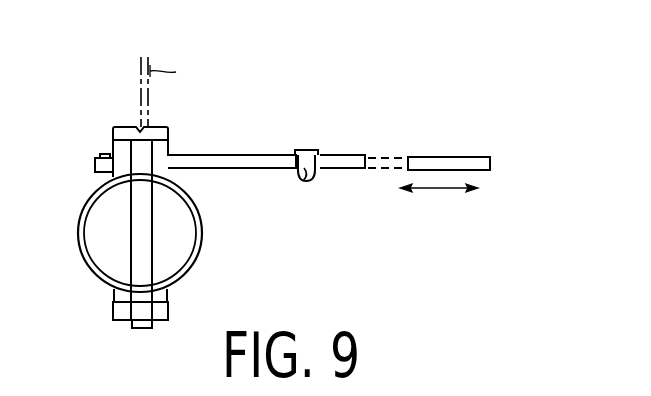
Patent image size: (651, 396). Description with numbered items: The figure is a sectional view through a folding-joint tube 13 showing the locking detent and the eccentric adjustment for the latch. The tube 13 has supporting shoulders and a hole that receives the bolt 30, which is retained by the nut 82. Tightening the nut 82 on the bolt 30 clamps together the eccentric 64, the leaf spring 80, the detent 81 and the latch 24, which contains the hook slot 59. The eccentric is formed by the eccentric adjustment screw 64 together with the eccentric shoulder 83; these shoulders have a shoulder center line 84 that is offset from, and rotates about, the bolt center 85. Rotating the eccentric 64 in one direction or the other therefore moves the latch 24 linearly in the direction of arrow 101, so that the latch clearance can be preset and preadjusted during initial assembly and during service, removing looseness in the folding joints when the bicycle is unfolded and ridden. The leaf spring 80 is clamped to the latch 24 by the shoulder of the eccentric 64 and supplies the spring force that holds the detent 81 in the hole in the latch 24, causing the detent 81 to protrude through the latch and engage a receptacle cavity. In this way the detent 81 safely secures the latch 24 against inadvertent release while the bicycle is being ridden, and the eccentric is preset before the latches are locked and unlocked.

The tube 13 is at (203, 222).
The latch 24 is at (468, 158).
The bolt 30 is at (164, 126).
The hook slot 59 is at (386, 162).
The eccentric adjustment screw 64 is at (168, 141).
The leaf spring 80 is at (262, 152).
The detent 81 is at (304, 180).
The nut 82 is at (168, 310).
The eccentric shoulder 83 is at (96, 176).
The shoulder center line 84 is at (191, 64).
The bolt center 85 is at (142, 33).
The arrow 101 is at (438, 190).